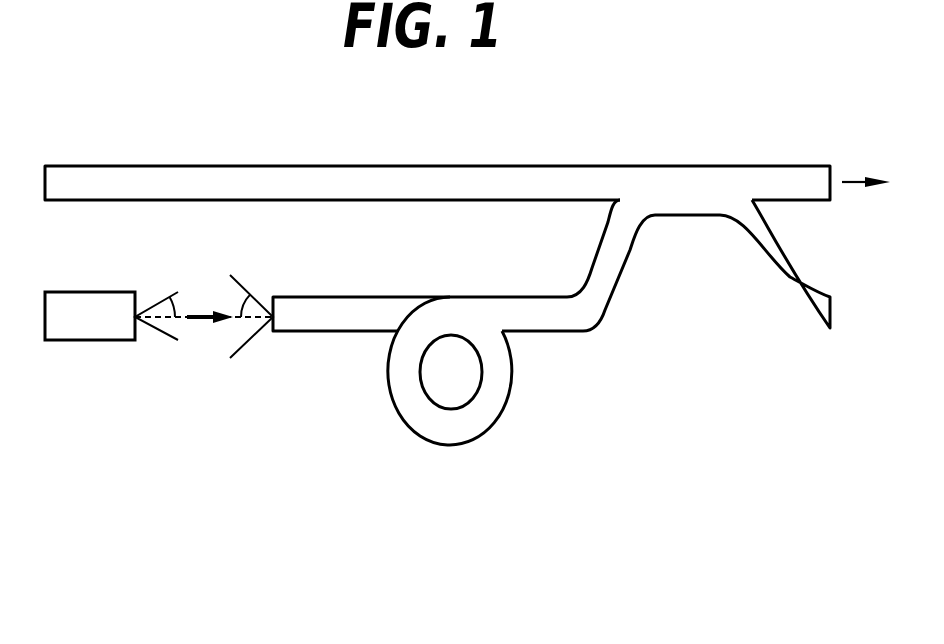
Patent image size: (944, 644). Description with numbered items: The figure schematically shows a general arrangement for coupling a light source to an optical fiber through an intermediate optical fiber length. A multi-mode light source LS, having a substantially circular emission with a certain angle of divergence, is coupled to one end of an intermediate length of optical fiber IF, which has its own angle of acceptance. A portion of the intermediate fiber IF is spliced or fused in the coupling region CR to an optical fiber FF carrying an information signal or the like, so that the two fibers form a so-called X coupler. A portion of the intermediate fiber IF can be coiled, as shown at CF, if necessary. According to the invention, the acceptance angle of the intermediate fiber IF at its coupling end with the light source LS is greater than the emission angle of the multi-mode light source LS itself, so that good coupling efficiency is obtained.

The optical fiber FF is at (467, 156).
The intermediate length of optical fiber IF is at (446, 265).
The coupling region CR is at (666, 265).
The coiled portion of the intermediate fiber CF is at (466, 371).
The multi-mode light source LS is at (159, 353).